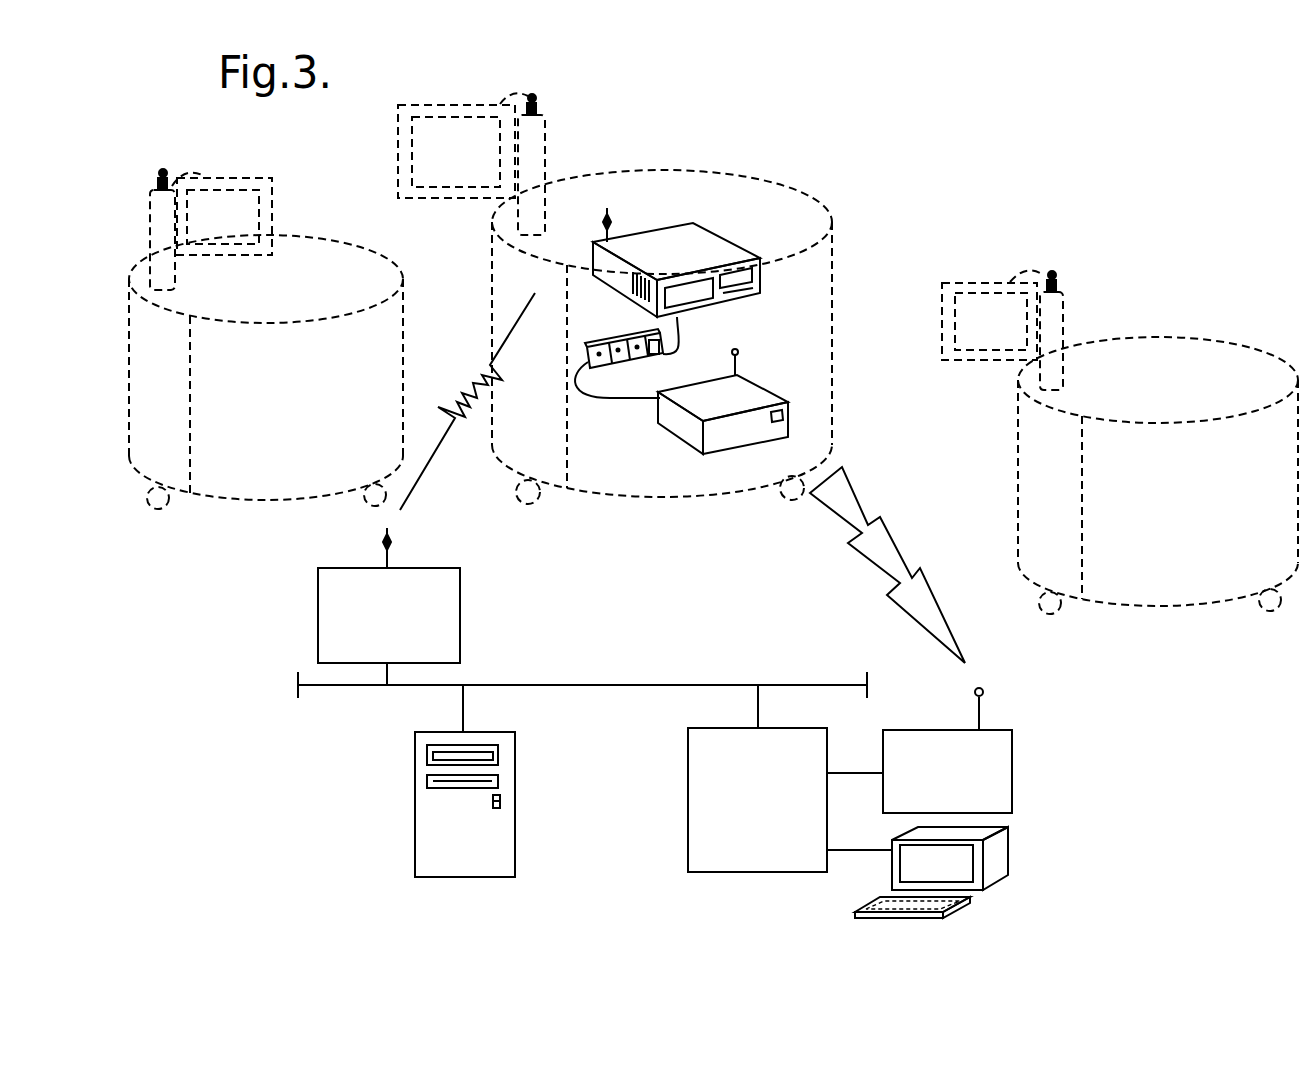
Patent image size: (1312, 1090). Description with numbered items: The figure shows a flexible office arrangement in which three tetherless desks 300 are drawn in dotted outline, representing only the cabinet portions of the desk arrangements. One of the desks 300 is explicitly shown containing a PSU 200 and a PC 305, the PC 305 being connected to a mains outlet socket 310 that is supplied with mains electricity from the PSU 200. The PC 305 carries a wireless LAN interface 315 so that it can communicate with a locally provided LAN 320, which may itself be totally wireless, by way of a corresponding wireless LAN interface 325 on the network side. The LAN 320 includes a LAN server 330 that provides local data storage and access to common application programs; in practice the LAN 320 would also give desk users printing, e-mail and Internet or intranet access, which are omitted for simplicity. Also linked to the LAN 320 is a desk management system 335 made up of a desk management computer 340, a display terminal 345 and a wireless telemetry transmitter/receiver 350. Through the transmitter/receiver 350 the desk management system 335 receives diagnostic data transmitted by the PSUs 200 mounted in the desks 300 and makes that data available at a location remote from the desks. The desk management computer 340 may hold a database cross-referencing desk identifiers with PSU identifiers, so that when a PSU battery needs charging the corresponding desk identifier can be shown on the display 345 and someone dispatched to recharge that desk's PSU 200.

The tetherless desk 300 is at (337, 240).
The PC 305 is at (717, 247).
The mains outlet socket 310 is at (613, 340).
The wireless LAN interface 315 is at (648, 208).
The PSU 200 is at (687, 430).
The wireless LAN interface 325 is at (490, 608).
The LAN 320 is at (622, 685).
The LAN server 330 is at (547, 797).
The desk management computer 340 is at (688, 775).
The wireless telemetry transmitter/receiver 350 is at (1043, 757).
The display terminal 345 is at (1042, 848).
The desk management system 335 is at (818, 892).